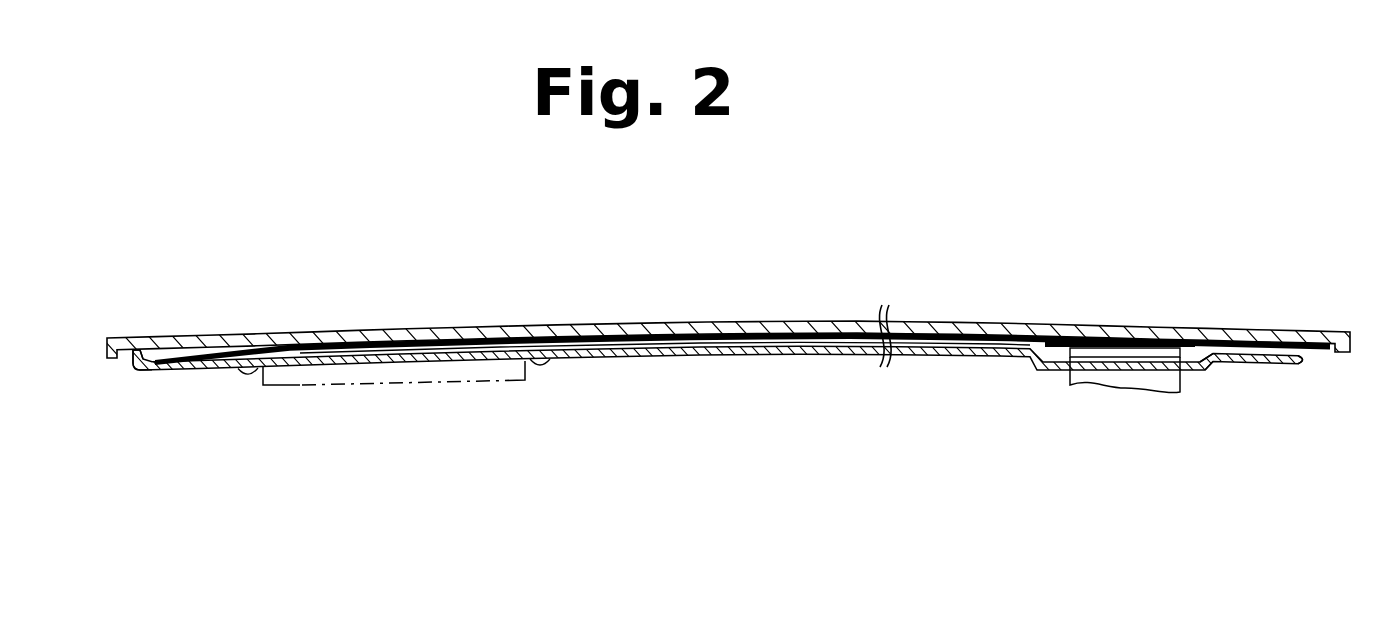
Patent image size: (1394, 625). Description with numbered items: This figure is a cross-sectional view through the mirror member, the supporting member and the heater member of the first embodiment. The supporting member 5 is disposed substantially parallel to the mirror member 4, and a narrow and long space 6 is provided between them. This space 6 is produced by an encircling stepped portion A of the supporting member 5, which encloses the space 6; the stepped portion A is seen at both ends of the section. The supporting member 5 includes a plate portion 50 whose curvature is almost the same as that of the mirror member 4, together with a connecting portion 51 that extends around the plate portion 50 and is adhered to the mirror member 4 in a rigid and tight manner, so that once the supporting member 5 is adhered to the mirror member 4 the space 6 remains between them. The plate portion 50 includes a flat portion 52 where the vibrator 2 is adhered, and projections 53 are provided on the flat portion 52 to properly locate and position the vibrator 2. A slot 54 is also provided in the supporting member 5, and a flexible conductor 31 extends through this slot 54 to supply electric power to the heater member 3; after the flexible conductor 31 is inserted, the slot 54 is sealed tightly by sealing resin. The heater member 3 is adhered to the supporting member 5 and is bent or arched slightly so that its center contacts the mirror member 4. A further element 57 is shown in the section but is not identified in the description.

The vibrator 2 is at (388, 392).
The heater member 3 is at (945, 357).
The mirror member 4 is at (995, 320).
The supporting member 5 is at (846, 358).
The space 6 is at (598, 352).
The flexible conductor 31 is at (1083, 378).
The plate portion 50 is at (695, 358).
The connecting portion 51 is at (124, 362).
The flat portion 52 is at (300, 385).
The projections 53 is at (245, 379).
The slot 54 is at (1203, 372).
The reinforcing member 57 is at (1060, 357).
The stepped portion A is at (130, 357).